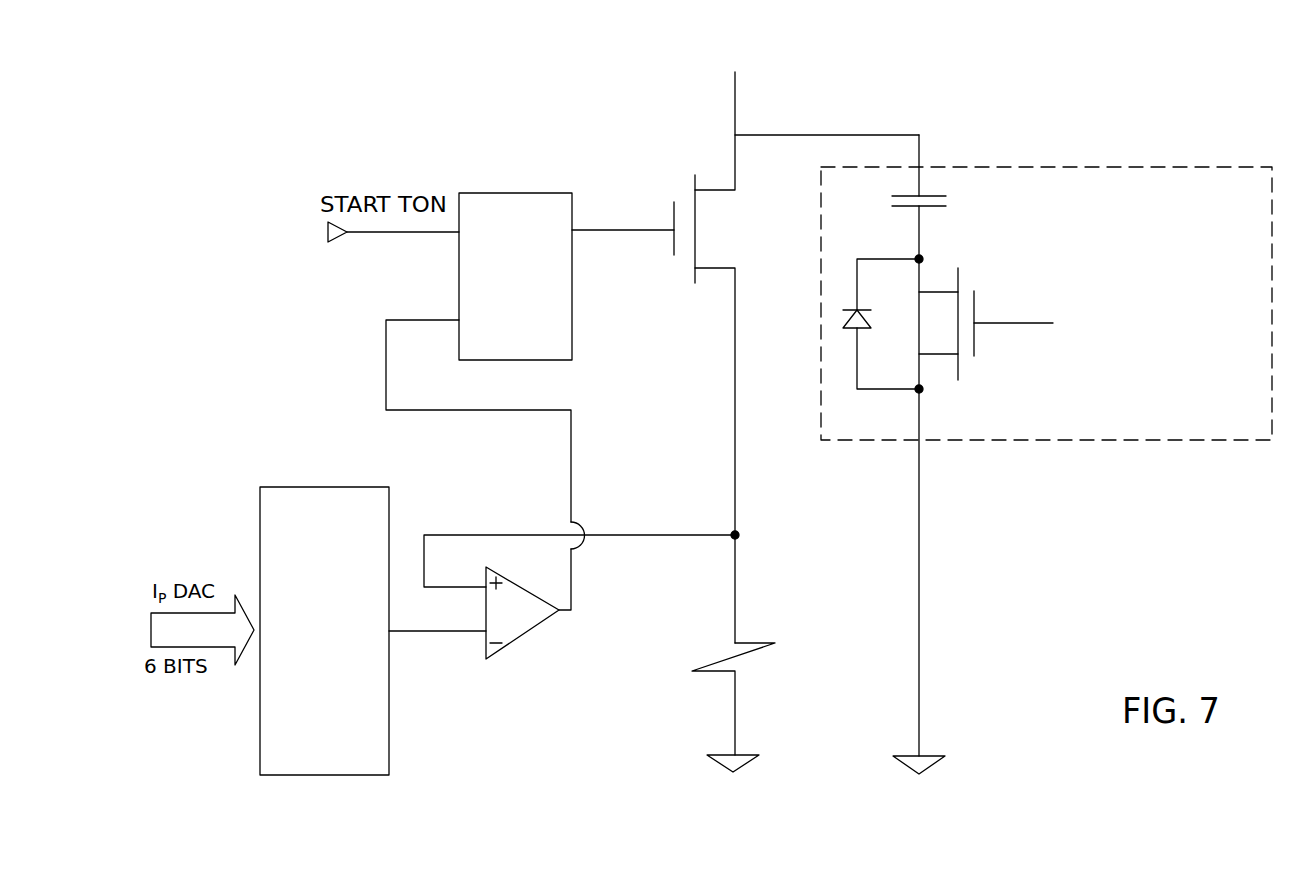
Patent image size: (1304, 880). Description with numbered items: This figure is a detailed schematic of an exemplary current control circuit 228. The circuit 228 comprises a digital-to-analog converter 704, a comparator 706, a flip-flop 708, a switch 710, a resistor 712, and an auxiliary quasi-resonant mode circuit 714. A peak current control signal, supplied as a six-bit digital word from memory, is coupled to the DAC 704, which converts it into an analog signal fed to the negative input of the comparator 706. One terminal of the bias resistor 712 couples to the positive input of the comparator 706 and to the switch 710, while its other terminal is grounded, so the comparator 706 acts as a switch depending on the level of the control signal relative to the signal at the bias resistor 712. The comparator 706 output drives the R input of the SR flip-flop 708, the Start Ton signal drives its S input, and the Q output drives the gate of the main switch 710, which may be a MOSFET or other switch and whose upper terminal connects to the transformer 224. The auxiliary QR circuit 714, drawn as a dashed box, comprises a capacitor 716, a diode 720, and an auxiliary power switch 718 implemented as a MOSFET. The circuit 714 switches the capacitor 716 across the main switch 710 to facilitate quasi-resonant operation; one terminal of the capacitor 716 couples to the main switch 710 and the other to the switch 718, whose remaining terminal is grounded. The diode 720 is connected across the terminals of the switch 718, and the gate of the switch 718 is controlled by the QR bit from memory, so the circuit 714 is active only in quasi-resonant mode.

The transformer 224 is at (827, 113).
The current control circuit 228 is at (1254, 122).
The digital-to-analog converter 704 is at (389, 747).
The comparator 706 is at (532, 627).
The flip-flop 708 is at (529, 193).
The switch 710 is at (672, 213).
The resistor 712 is at (755, 643).
The auxiliary quasi-resonant mode circuit 714 is at (1057, 168).
The capacitor 716 is at (935, 208).
The auxiliary power switch 718 is at (975, 300).
The diode 720 is at (848, 330).